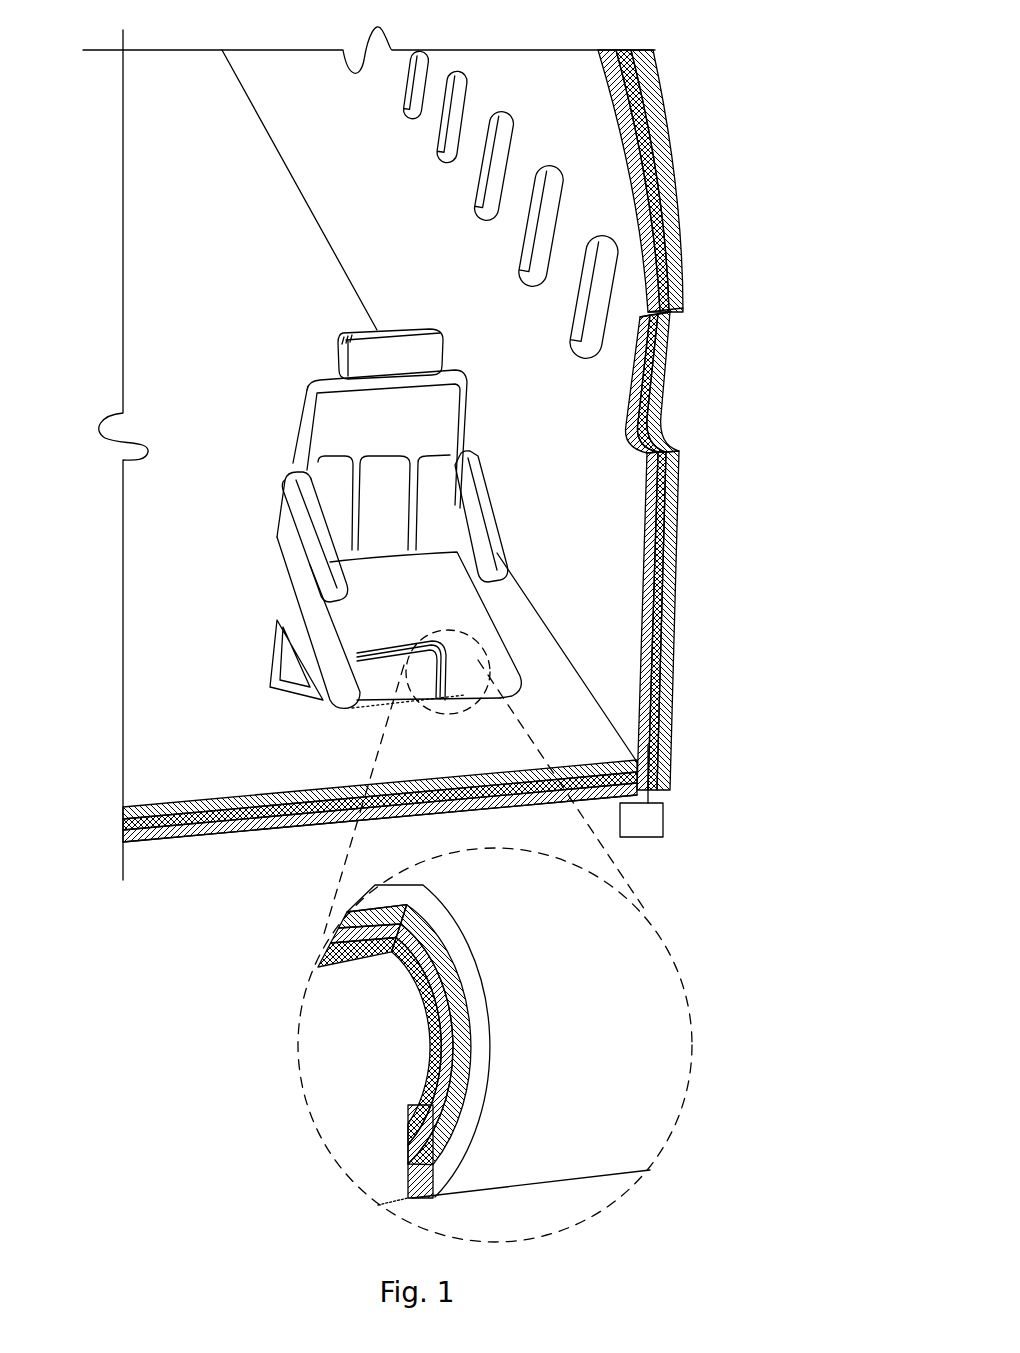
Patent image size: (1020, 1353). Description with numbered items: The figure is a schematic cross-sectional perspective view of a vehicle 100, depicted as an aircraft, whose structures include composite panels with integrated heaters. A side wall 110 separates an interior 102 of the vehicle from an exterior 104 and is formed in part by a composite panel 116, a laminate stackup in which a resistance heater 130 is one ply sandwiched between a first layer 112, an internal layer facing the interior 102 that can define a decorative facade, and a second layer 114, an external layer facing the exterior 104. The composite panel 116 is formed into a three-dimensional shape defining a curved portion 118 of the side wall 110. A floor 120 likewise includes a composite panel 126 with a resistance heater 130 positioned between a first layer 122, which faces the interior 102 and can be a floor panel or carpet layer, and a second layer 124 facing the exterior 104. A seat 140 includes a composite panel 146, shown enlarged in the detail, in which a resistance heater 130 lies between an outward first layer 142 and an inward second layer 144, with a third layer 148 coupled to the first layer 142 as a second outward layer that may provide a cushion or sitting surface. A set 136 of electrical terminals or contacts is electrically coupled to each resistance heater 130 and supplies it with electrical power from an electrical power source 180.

The vehicle 100 is at (694, 100).
The interior 102 is at (221, 395).
The exterior 104 is at (752, 378).
The side wall 110 is at (682, 198).
The first layer 112 is at (643, 548).
The second layer 114 is at (678, 580).
The composite panel 116 is at (715, 511).
The curved portion 118 is at (680, 132).
The floor 120 is at (176, 850).
The first layer 122 is at (195, 805).
The second layer 124 is at (247, 835).
The composite panel 126 is at (212, 853).
The resistance heater 130 is at (670, 466).
The set of electrical terminals 136 is at (612, 765).
The seat 140 is at (268, 494).
The first layer 142 is at (408, 1165).
The second layer 144 is at (423, 1005).
The composite panel 146 is at (355, 1052).
The third layer 148 is at (418, 1185).
The electrical power source 180 is at (630, 831).